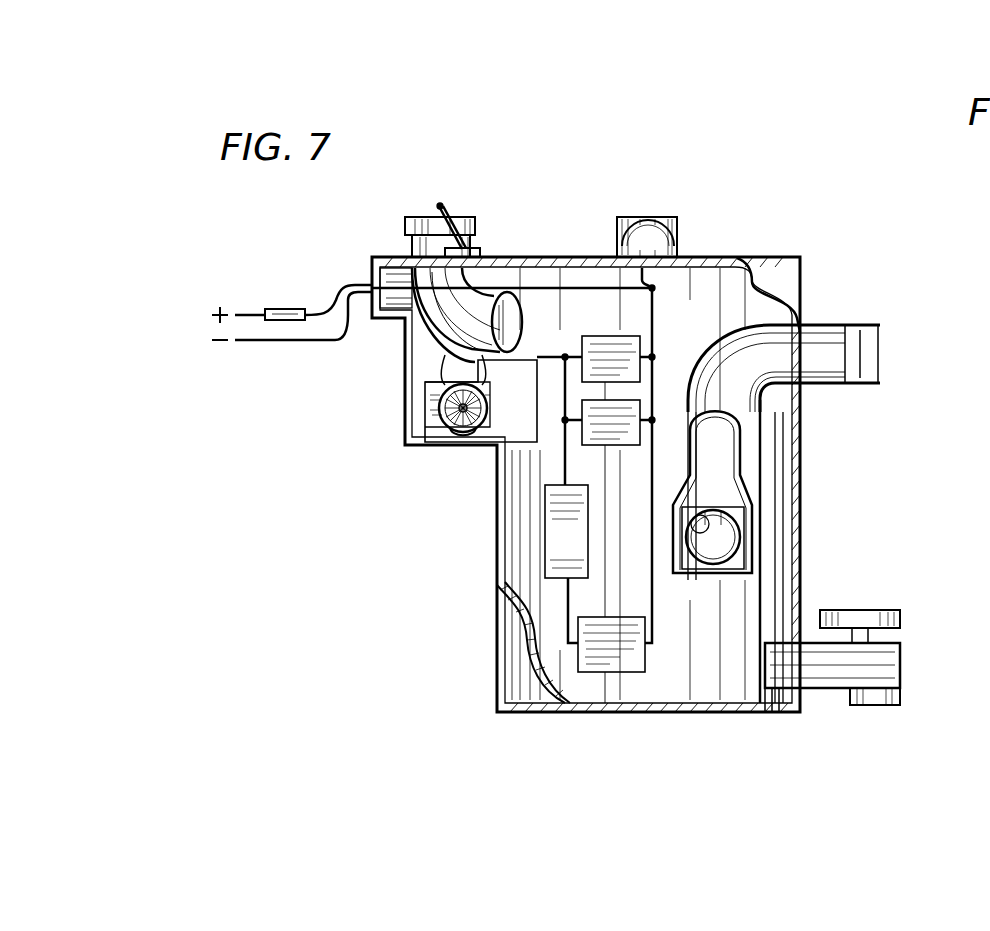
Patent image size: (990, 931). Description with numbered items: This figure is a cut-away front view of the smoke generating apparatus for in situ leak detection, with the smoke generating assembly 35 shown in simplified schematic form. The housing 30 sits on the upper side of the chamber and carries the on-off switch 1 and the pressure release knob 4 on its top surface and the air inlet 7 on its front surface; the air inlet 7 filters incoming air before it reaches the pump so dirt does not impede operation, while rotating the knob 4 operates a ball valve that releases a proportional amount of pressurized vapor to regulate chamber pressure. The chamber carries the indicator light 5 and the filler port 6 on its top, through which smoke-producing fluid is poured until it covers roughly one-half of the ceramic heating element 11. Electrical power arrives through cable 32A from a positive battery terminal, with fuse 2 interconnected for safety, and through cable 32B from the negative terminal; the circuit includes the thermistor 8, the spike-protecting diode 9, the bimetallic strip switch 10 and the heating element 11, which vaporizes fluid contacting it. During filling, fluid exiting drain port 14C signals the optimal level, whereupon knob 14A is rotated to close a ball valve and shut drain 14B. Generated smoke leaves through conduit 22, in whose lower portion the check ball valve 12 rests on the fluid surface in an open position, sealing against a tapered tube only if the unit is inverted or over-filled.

The on-off switch 1 is at (445, 209).
The fuse 2 is at (283, 307).
The pressure release knob 4 is at (405, 225).
The indicator light 5 is at (676, 232).
The filler port 6 is at (630, 215).
The air inlet 7 is at (448, 440).
The thermistor 8 is at (636, 345).
The spike-protecting diode 9 is at (582, 414).
The switch 10 is at (548, 535).
The ceramic heating element 11 is at (610, 665).
The check ball valve 12 is at (748, 537).
The knob 14A is at (838, 610).
The drain 14B is at (900, 665).
The drain port 14C is at (880, 703).
The conduit 22 is at (815, 325).
The housing 30 is at (440, 410).
The cable 32A is at (248, 314).
The cable 32B is at (270, 340).
The smoke generating assembly 35 is at (700, 585).